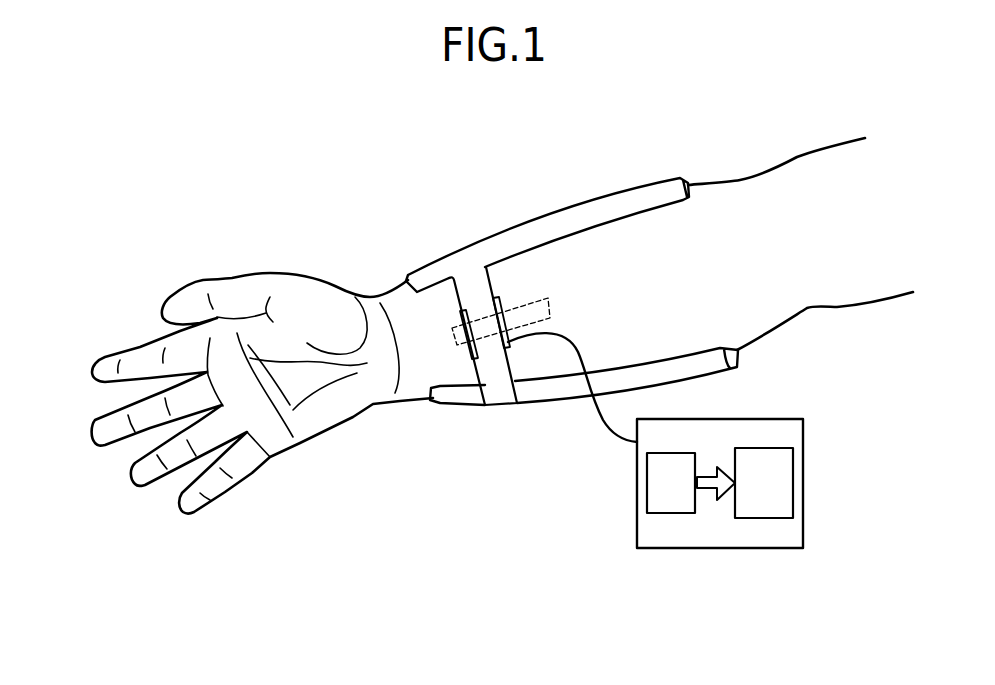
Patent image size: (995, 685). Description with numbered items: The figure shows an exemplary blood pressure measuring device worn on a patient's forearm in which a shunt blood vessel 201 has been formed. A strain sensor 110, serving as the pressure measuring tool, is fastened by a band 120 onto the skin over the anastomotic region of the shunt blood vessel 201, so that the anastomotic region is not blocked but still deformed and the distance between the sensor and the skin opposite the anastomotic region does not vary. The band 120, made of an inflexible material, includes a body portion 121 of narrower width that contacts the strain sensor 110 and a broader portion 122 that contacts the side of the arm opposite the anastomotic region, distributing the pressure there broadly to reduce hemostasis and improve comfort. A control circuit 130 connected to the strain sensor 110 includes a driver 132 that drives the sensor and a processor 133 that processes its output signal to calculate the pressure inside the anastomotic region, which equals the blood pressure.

The strain sensor 110 is at (473, 358).
The band 120 is at (503, 161).
The body portion 121 is at (497, 273).
The broader portion 122 is at (424, 271).
The control circuit 130 is at (785, 605).
The driver 132 is at (668, 515).
The processor 133 is at (752, 518).
The shunt blood vessel 201 is at (535, 300).